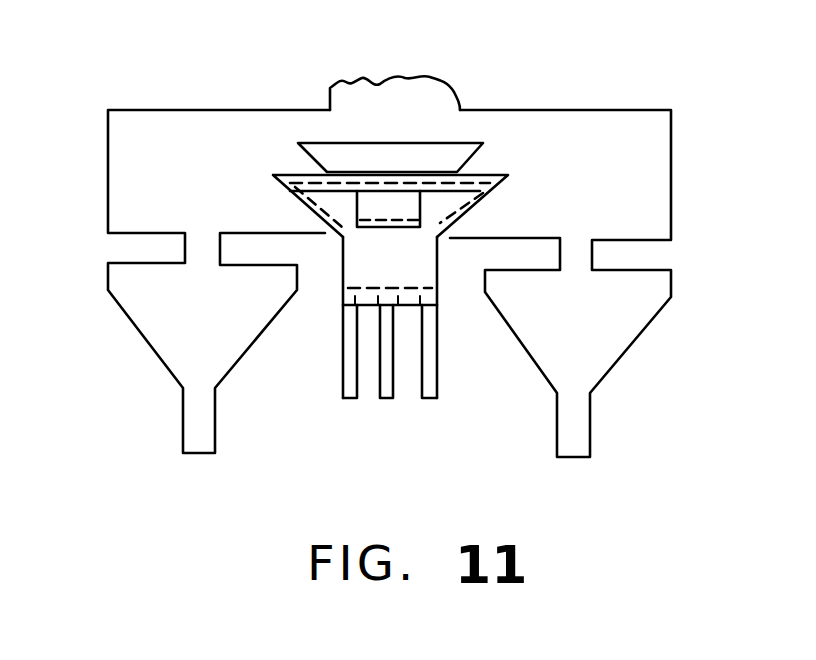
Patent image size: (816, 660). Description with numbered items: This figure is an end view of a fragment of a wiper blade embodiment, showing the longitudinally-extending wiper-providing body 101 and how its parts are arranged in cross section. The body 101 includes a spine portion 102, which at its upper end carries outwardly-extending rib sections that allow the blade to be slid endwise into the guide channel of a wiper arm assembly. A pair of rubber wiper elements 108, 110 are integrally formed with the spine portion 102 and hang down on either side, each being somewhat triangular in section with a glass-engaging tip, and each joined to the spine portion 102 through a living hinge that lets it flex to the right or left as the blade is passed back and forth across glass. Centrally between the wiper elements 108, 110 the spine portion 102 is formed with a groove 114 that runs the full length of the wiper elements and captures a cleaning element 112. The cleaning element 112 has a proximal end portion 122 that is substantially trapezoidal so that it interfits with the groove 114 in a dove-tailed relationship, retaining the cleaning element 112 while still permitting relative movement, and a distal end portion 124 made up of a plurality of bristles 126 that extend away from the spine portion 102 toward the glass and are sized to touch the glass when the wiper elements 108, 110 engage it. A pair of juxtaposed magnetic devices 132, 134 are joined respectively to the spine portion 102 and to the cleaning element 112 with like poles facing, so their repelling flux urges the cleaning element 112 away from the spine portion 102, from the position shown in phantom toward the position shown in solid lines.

The wiper-providing body 101 is at (663, 157).
The spine portion 102 is at (368, 82).
The rubber wiper element 108 is at (160, 348).
The rubber wiper element 110 is at (610, 357).
The cleaning element 112 is at (437, 273).
The groove 114 is at (287, 175).
The proximal end portion 122 is at (328, 222).
The distal end portion 124 is at (343, 355).
The bristles 126 is at (392, 398).
The magnetic device 132 is at (452, 150).
The magnetic device 134 is at (420, 207).